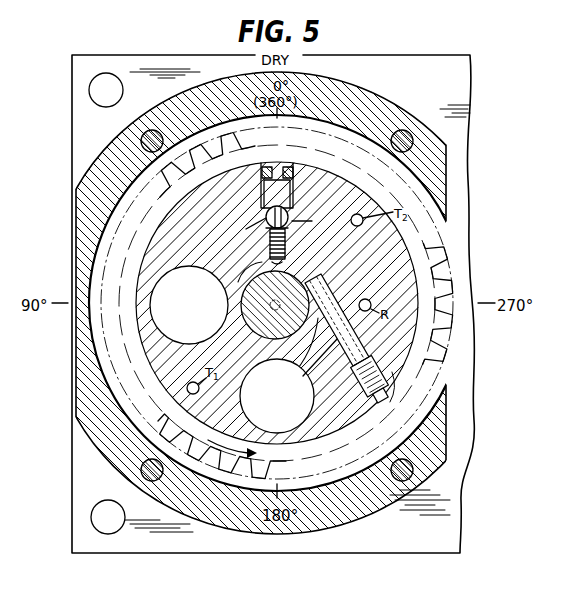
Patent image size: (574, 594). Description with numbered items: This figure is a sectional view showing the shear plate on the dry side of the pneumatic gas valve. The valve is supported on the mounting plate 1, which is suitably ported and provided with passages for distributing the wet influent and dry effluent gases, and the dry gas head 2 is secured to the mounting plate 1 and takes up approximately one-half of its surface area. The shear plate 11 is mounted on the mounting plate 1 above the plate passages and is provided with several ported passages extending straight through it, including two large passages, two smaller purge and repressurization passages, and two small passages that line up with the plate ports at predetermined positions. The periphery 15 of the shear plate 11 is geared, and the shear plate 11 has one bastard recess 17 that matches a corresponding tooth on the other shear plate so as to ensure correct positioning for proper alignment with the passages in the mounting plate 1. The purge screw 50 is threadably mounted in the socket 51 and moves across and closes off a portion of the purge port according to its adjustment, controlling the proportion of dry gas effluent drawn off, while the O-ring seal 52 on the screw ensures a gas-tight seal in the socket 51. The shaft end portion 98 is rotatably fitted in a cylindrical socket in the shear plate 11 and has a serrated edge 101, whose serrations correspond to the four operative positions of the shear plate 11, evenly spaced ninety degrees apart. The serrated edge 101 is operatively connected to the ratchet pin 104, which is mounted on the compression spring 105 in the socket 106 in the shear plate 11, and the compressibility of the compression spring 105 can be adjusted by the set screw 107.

The mounting plate 1 is at (76, 155).
The dry gas head 2 is at (118, 148).
The shear plate 11 is at (428, 242).
The periphery 15 is at (300, 463).
The bastard recess 17 is at (447, 262).
The purge screw 50 is at (276, 199).
The socket 51 is at (262, 192).
The O-ring seal 52 is at (290, 172).
The portion 98 is at (240, 316).
The serrated edge 101 is at (189, 305).
The ratchet pin 104 is at (302, 365).
The compression spring 105 is at (277, 396).
The socket 106 is at (362, 363).
The set screw 107 is at (384, 405).